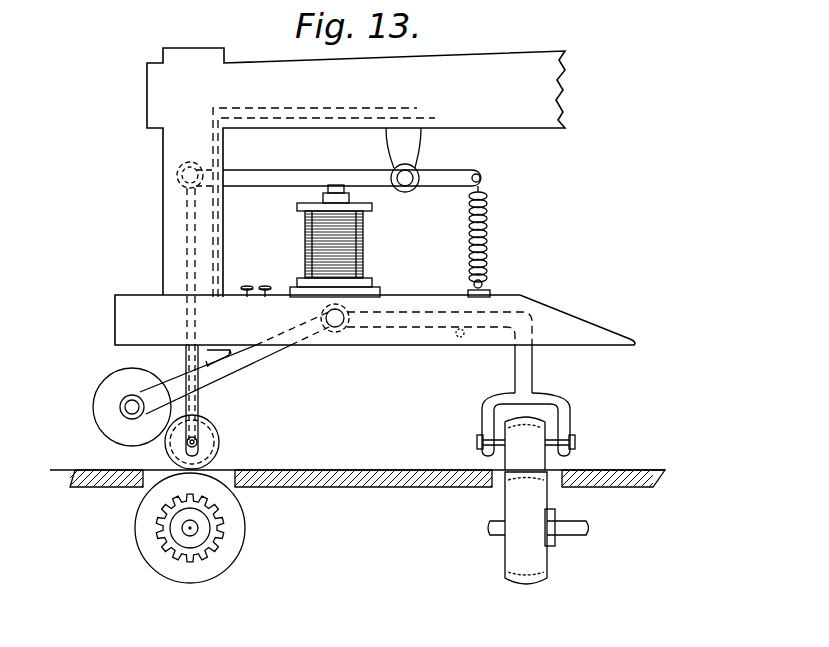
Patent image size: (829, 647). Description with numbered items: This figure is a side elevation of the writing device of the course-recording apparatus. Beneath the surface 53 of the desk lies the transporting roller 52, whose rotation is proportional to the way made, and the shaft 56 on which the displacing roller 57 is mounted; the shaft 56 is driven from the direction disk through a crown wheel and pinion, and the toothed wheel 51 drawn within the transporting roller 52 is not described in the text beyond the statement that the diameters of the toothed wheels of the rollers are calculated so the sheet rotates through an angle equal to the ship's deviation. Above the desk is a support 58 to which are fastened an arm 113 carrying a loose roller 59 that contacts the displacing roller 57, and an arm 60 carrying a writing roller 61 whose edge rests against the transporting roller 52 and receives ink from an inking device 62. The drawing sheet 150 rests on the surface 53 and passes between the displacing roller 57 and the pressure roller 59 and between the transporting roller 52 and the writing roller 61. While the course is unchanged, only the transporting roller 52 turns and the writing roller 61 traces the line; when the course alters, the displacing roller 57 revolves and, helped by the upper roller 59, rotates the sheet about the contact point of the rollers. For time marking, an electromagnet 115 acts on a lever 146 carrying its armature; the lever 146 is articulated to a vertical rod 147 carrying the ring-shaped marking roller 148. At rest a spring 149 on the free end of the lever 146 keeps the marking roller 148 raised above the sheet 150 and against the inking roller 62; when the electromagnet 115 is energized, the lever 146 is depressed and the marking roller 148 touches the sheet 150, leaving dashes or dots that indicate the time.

The support 58 is at (356, 172).
The lever 146 is at (322, 160).
The vertical rod 147 is at (186, 218).
The electromagnet 115 is at (362, 236).
The spring 149 is at (485, 247).
The arm 60 is at (251, 358).
The inking device 62 is at (107, 378).
The marking roller 148 is at (205, 423).
The writing roller 61 is at (217, 446).
The drawing sheet 150 is at (325, 470).
The surface of the desk 53 is at (415, 462).
The arm 113 is at (560, 403).
The loose roller 59 is at (525, 443).
The displacing roller 57 is at (526, 528).
The shaft 56 is at (586, 528).
The transporting roller 52 is at (240, 553).
The gear 51 is at (222, 523).